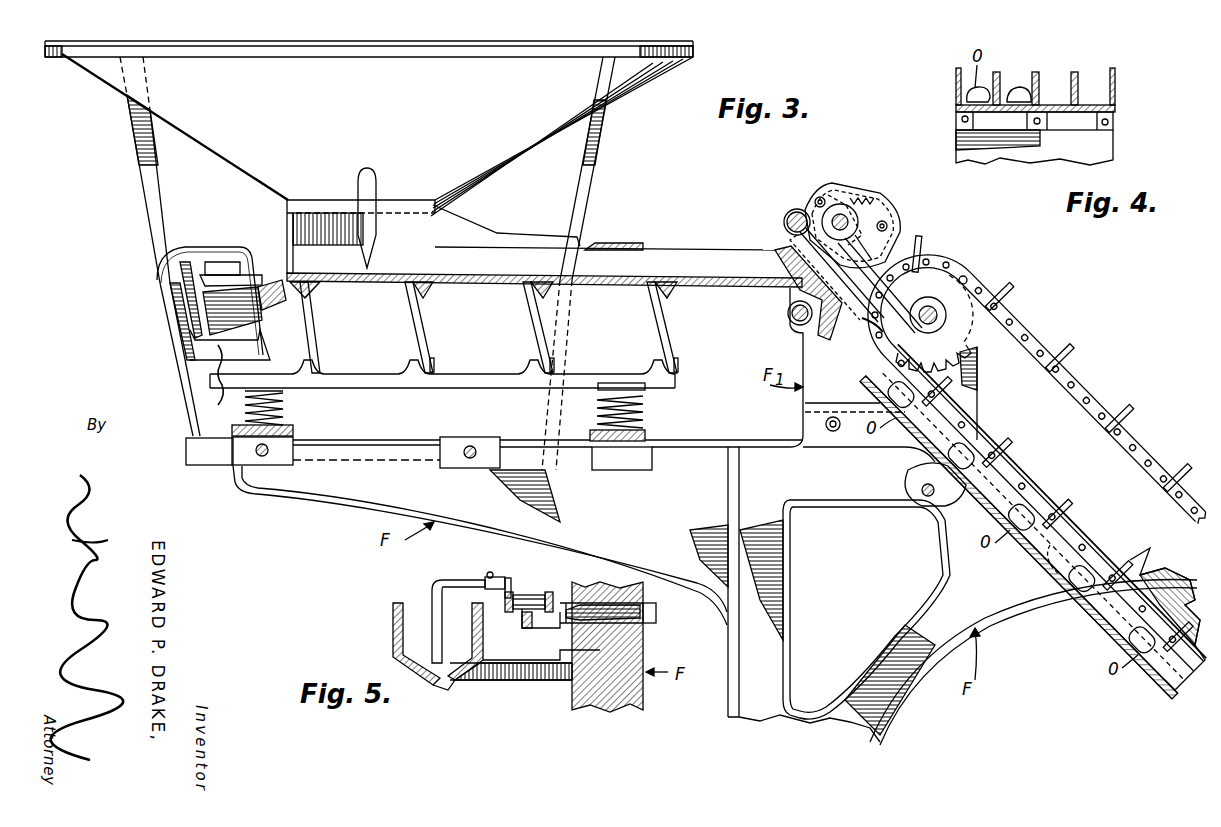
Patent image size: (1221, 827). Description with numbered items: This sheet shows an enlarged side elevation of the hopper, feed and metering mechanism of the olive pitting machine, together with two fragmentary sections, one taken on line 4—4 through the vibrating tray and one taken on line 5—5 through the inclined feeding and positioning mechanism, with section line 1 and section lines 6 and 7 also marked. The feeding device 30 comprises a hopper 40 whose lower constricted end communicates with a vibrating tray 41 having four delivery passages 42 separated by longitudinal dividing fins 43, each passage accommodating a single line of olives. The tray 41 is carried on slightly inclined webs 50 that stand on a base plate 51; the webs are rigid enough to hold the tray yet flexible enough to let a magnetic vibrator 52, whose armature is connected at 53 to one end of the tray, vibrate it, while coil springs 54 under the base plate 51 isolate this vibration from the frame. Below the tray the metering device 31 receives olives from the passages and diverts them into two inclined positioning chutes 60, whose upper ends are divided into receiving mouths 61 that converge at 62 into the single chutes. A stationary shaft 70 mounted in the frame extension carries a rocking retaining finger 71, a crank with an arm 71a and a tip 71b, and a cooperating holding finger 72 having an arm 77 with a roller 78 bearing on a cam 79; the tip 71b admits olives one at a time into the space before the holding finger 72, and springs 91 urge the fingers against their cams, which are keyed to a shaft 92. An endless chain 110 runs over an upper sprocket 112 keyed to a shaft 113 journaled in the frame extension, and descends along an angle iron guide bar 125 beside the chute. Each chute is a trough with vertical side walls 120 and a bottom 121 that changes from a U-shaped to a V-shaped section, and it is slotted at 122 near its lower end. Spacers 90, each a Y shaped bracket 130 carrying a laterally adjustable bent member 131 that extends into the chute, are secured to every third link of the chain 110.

In FIG. 3, the feeding device 30 is at (238, 168).
In FIG. 3, the hopper 40 is at (369, 255).
In FIG. 3, the vibrating tray 41 is at (714, 246).
In FIG. 4, the vibrating tray 41 is at (1116, 98).
In FIG. 3, the delivery passages 42 is at (510, 270).
In FIG. 4, the delivery passages 42 is at (1040, 90).
In FIG. 3, the longitudinal dividing fins 43 is at (628, 250).
In FIG. 4, the longitudinal dividing fins 43 is at (998, 85).
In FIG. 3, the webs 50 is at (303, 353).
In FIG. 4, the webs 50 is at (1038, 150).
In FIG. 3, the base plate 51 is at (483, 383).
In FIG. 3, the magnetic vibrator 52 is at (240, 265).
In FIG. 3, the armature connection 53 is at (298, 302).
In FIG. 3, the coil springs 54 is at (286, 410).
In FIG. 3, the positioning chutes 60 is at (866, 394).
In FIG. 5, the positioning chutes 60 is at (388, 645).
In FIG. 3, the receiving mouths 61 is at (788, 258).
In FIG. 3, the convergence 62 is at (848, 345).
In FIG. 3, the stationary shaft 70 is at (784, 222).
In FIG. 3, the retaining finger 71 is at (805, 250).
In FIG. 3, the arm 71a is at (850, 196).
In FIG. 3, the tip 71b is at (865, 328).
In FIG. 3, the holding finger 72 is at (880, 285).
In FIG. 3, the arm 77 is at (824, 190).
In FIG. 3, the roller 78 is at (818, 196).
In FIG. 3, the cam 79 is at (848, 217).
In FIG. 3, the spacer 90 is at (918, 246).
In FIG. 5, the spacer 90 is at (437, 642).
In FIG. 3, the springs 91 is at (887, 224).
In FIG. 3, the shaft 92 is at (872, 232).
In FIG. 3, the endless chain 110 is at (968, 281).
In FIG. 5, the endless chain 110 is at (530, 594).
In FIG. 3, the upper sprocket 112 is at (975, 350).
In FIG. 3, the shaft 113 is at (935, 297).
In FIG. 3, the vertical side walls 120 is at (1068, 540).
In FIG. 5, the vertical side walls 120 is at (392, 619).
In FIG. 3, the bottom 121 is at (1055, 552).
In FIG. 5, the bottom 121 is at (418, 672).
In FIG. 3, the slot 122 is at (1150, 665).
In FIG. 5, the slot 122 is at (440, 683).
In FIG. 5, the angle iron guide bar 125 is at (526, 612).
In FIG. 5, the Y shaped bracket 130 is at (508, 578).
In FIG. 5, the member 131 is at (450, 580).
In FIG. 3, the metering device 31 is at (845, 180).
In FIG. 3, the section line 1 is at (1000, 393).
In FIG. 3, the section line 4 is at (682, 195).
In FIG. 3, the section line 5 is at (1130, 528).
In FIG. 3, the section line 6 is at (605, 214).
In FIG. 3, the section line 7 is at (812, 191).